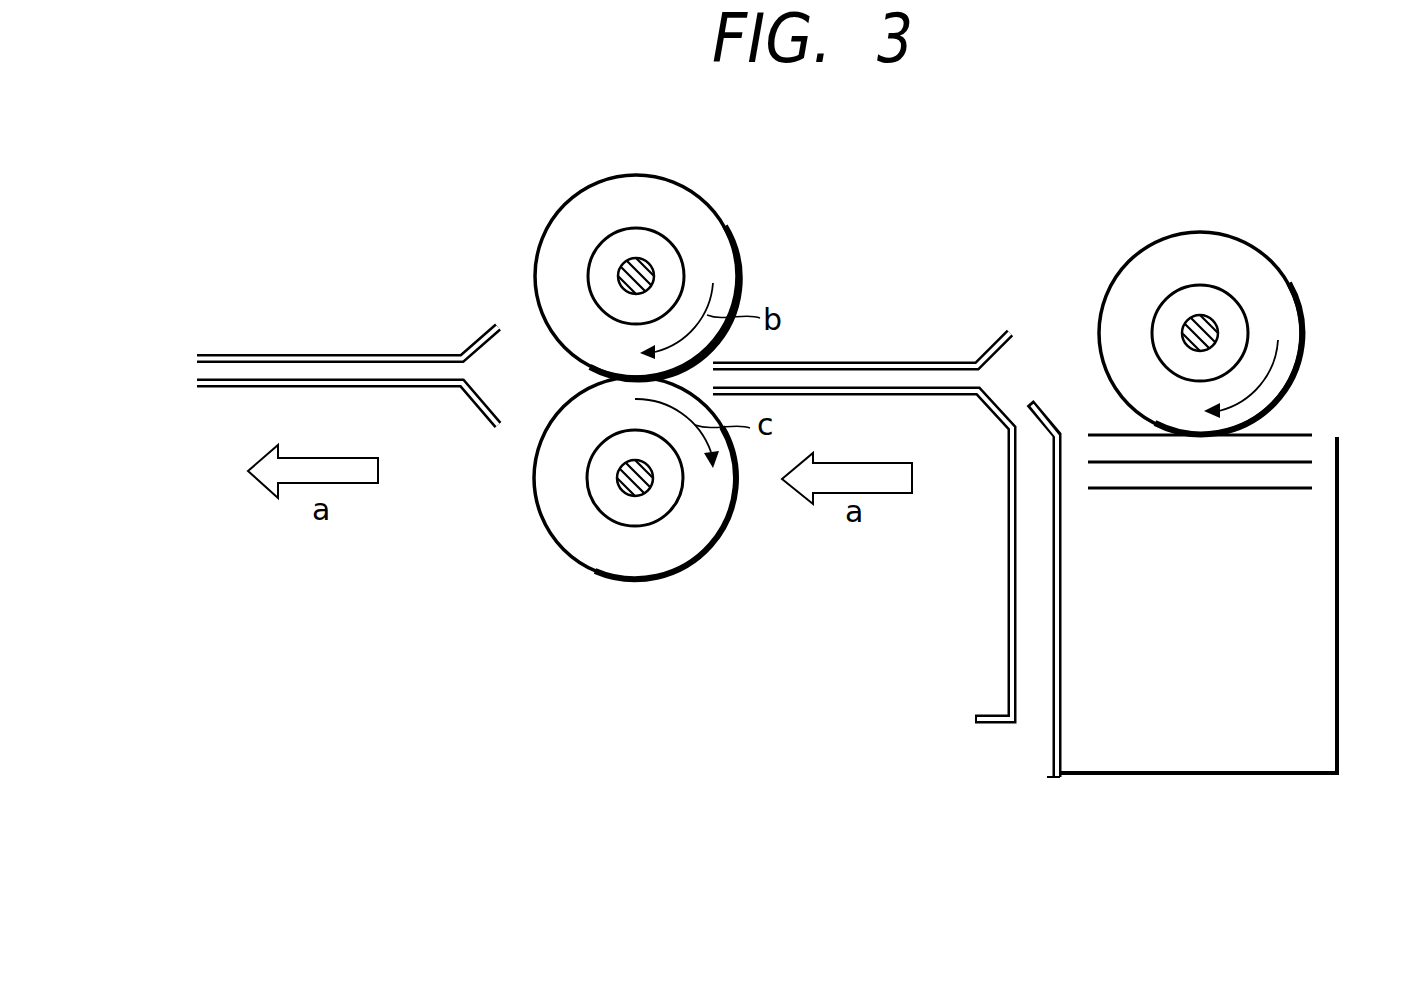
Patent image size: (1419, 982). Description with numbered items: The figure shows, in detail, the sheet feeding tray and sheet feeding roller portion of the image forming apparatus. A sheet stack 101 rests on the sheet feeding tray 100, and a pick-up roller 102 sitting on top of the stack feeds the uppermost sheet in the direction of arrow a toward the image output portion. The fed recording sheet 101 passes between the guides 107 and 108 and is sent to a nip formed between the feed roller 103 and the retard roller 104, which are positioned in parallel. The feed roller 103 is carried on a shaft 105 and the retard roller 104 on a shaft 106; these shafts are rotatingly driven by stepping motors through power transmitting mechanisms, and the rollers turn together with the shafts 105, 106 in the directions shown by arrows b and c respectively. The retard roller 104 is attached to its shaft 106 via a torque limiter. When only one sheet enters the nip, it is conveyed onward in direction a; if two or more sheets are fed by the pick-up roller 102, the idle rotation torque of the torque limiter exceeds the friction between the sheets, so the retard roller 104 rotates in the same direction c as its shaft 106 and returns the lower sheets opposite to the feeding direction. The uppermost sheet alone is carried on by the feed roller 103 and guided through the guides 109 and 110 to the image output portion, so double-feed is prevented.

The sheet feeding tray 100 is at (1340, 495).
The sheet stack 101 is at (1290, 437).
The pick-up roller 102 is at (1288, 278).
The feed roller 103 is at (723, 227).
The retard roller 104 is at (702, 555).
The shaft 105 is at (638, 257).
The shaft 106 is at (628, 495).
The guide 107 is at (890, 362).
The guide 108 is at (890, 396).
The guide 109 is at (347, 355).
The guide 110 is at (347, 388).